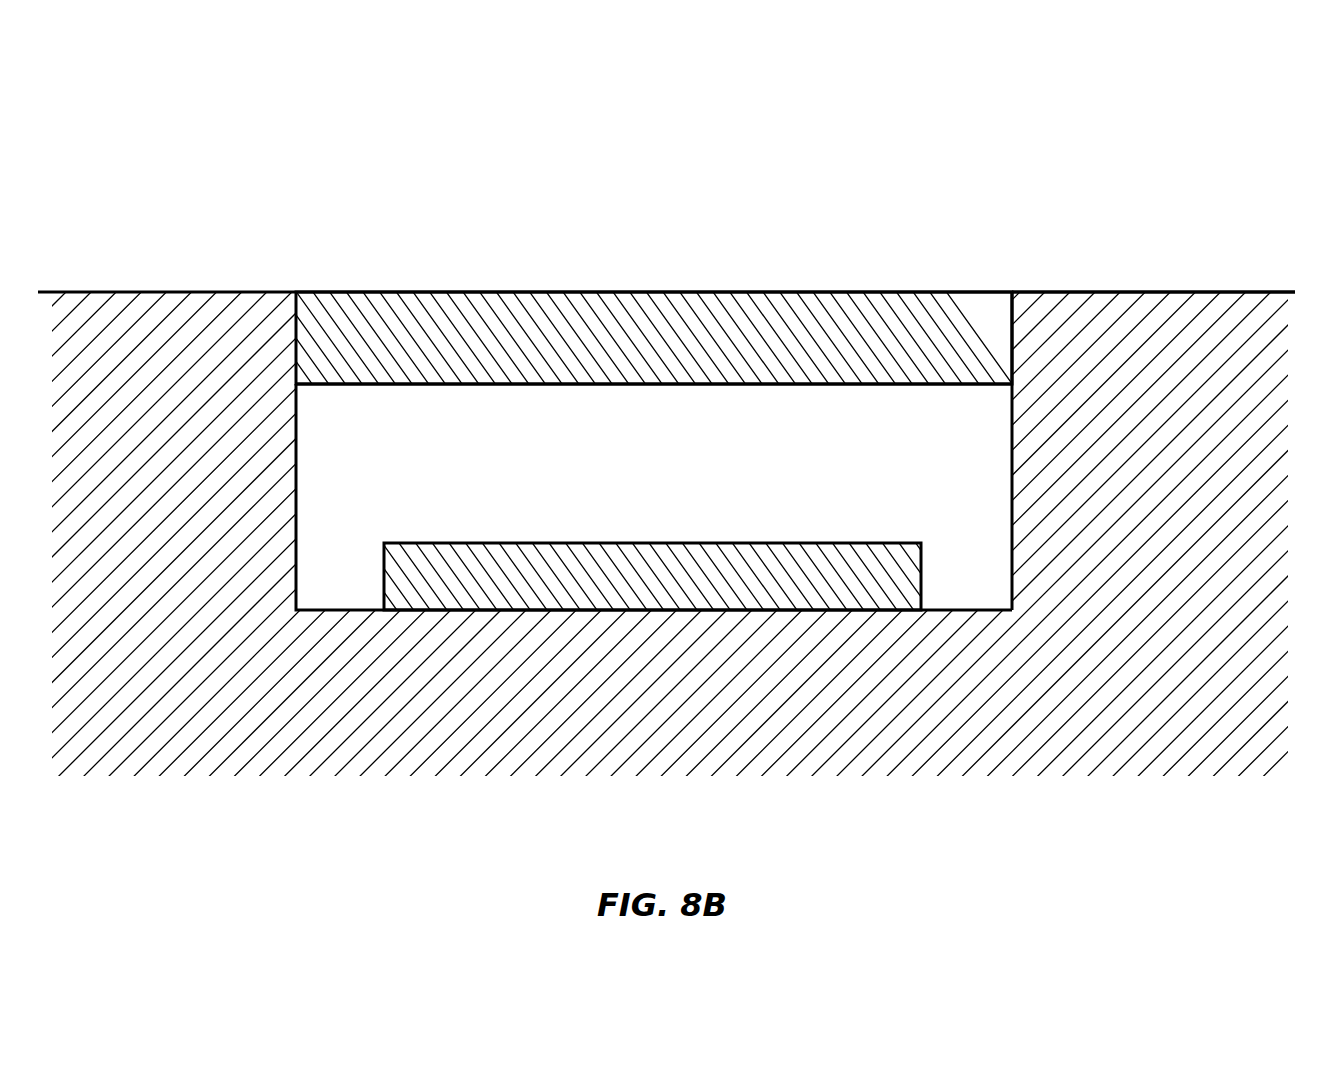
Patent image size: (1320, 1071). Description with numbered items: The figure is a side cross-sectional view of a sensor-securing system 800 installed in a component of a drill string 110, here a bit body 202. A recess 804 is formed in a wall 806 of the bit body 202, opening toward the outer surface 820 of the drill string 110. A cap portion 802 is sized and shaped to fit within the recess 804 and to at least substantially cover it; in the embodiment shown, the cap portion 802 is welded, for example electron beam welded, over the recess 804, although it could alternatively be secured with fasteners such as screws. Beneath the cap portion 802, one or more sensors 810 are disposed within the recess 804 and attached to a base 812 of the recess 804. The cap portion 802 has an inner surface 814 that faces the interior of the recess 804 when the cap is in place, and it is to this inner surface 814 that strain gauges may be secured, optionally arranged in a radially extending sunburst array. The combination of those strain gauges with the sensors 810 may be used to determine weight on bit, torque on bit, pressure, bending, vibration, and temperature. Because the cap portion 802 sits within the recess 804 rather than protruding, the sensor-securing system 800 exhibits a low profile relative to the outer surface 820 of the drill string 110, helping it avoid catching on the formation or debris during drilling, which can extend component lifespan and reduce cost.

The sensor-securing system 800 is at (809, 126).
The bit body 202 is at (192, 370).
The drill string 110 is at (1176, 340).
The outer surface 820 is at (1273, 282).
The wall 806 is at (1078, 292).
The cap portion 802 is at (868, 320).
The inner surface 814 is at (738, 397).
The recess 804 is at (1011, 448).
The base 812 is at (347, 610).
The sensor 810 is at (487, 583).